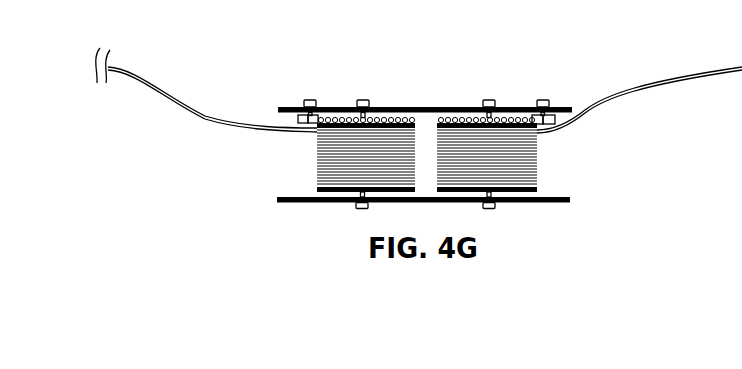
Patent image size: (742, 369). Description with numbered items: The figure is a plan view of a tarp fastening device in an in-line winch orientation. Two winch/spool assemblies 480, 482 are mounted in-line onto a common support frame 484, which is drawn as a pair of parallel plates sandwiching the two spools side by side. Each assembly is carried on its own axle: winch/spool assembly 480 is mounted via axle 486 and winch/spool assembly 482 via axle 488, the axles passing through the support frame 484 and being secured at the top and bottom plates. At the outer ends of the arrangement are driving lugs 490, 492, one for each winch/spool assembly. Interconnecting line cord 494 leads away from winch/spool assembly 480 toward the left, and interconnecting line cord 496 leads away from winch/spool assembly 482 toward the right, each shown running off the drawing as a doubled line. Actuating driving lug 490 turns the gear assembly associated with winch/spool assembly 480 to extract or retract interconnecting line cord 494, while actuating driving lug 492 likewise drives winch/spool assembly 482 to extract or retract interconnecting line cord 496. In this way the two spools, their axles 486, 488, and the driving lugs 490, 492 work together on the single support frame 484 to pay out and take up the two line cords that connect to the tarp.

The winch/spool assembly 480 is at (316, 190).
The winch/spool assembly 482 is at (537, 187).
The support frame 484 is at (390, 107).
The axle 486 is at (363, 100).
The axle 488 is at (492, 100).
The driving lug 490 is at (300, 103).
The driving lug 492 is at (552, 102).
The interconnecting line cord 494 is at (213, 118).
The interconnecting line cord 496 is at (687, 78).